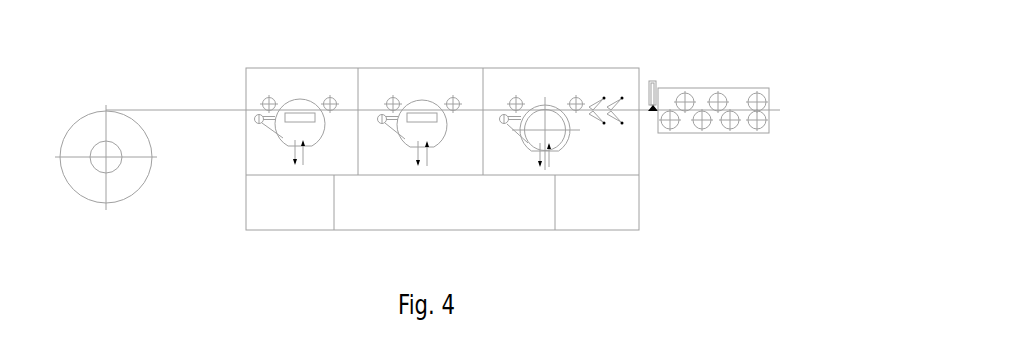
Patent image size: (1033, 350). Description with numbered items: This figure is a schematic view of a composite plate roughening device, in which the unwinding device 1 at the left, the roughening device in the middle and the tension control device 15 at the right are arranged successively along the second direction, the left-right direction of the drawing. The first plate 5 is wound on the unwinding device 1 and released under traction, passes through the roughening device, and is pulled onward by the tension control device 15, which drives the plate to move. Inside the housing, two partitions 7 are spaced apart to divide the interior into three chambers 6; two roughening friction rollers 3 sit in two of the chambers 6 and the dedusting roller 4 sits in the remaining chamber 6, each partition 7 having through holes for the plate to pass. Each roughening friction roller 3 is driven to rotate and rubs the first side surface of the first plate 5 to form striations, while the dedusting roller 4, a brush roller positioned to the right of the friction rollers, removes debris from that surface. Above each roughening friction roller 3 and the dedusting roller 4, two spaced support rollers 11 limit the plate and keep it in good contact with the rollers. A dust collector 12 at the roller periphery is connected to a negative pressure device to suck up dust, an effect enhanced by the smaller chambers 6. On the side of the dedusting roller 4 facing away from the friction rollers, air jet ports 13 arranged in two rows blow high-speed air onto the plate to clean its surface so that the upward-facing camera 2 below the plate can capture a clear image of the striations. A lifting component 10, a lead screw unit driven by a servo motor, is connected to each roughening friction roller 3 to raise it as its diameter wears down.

The unwinding device 1 is at (107, 107).
The camera 2 is at (697, 147).
The roughening friction roller 3 is at (370, 75).
The dedusting roller 4 is at (550, 87).
The first plate 5 is at (443, 57).
The chamber 6 is at (473, 165).
The partition 7 is at (441, 89).
The lifting component 10 is at (469, 200).
The support roller 11 is at (443, 58).
The dust collector 12 is at (421, 190).
The air jet port 13 is at (630, 64).
The tension control device 15 is at (713, 68).